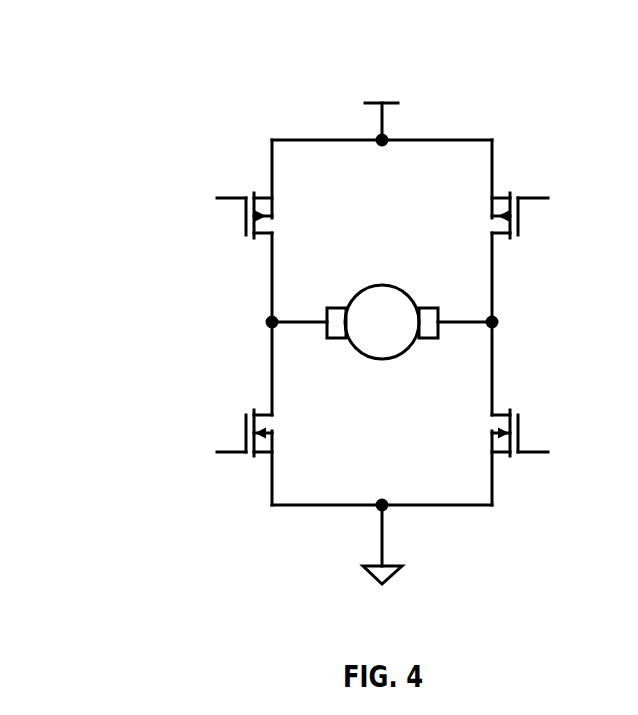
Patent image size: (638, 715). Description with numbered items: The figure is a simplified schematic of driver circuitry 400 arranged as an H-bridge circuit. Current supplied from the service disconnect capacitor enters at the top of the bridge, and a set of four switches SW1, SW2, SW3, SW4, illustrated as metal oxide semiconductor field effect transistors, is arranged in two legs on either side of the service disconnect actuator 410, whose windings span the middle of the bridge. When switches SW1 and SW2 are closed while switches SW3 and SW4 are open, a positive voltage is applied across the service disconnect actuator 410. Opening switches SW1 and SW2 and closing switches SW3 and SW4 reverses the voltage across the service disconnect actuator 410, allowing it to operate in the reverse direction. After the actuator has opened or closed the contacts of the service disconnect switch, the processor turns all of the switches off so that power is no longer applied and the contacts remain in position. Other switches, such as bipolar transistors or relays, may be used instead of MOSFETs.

The driver circuitry 400 is at (122, 84).
The service disconnect actuator 410 is at (382, 285).
The switch SW1 is at (244, 233).
The switch SW2 is at (520, 417).
The switch SW3 is at (520, 233).
The switch SW4 is at (244, 417).